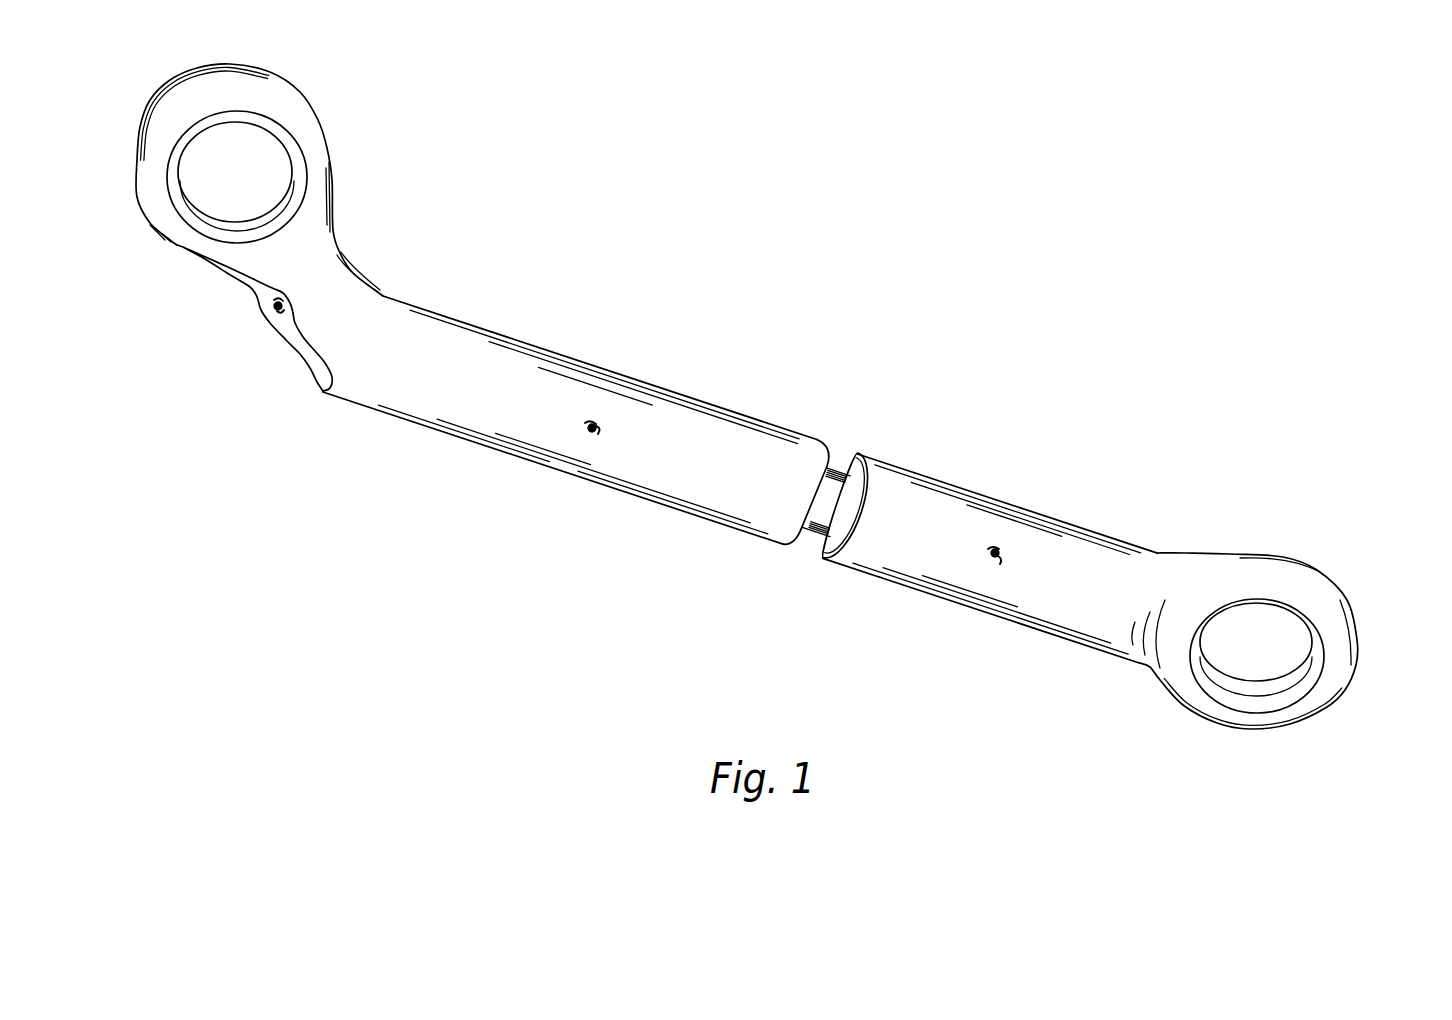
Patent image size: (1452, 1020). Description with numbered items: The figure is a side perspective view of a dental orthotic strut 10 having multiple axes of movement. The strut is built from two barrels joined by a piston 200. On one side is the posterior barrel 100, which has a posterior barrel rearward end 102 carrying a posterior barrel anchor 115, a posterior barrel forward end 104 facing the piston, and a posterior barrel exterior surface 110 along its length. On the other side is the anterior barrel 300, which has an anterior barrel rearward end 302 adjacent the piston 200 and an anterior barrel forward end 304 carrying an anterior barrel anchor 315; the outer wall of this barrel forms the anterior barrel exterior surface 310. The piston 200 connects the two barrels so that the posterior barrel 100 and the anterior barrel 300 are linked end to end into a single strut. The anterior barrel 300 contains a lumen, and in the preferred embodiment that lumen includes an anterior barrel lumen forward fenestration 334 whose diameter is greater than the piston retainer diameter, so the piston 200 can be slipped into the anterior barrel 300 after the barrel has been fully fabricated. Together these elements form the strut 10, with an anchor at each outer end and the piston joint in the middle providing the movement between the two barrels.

The dental orthotic strut 10 is at (707, 303).
The posterior barrel 100 is at (1014, 654).
The posterior barrel rearward end 102 is at (1360, 576).
The posterior barrel forward end 104 is at (820, 572).
The posterior barrel exterior surface 110 is at (997, 551).
The posterior barrel anchor 115 is at (1272, 600).
The piston 200 is at (815, 534).
The anterior barrel 300 is at (422, 445).
The anterior barrel rearward end 302 is at (810, 416).
The anterior barrel forward end 304 is at (220, 285).
The anterior barrel exterior surface 310 is at (591, 428).
The anterior barrel anchor 315 is at (287, 149).
The anterior barrel lumen forward fenestration 334 is at (271, 314).